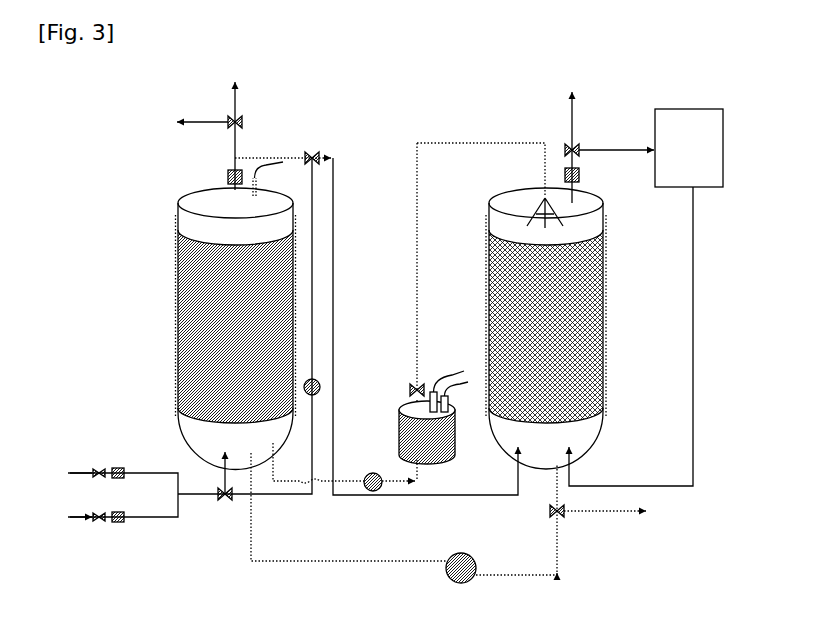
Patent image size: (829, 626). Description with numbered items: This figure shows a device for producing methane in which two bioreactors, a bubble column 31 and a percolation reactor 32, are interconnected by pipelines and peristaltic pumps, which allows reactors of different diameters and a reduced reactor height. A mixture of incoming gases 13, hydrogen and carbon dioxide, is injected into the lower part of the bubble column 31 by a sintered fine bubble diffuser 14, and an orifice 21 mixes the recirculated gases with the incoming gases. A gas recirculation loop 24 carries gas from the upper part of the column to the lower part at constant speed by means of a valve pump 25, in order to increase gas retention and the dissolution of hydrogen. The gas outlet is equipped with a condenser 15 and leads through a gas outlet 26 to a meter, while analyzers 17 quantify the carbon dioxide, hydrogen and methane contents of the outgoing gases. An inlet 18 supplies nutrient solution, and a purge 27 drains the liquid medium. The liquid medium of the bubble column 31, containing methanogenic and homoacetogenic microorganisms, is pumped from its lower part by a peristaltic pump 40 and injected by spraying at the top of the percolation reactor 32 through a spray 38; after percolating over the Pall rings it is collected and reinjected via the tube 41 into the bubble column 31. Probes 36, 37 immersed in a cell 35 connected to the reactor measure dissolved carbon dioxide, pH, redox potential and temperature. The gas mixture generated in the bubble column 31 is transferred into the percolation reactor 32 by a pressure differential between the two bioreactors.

The incoming gases 13 is at (200, 501).
The sintered fine bubble diffuser 14 is at (196, 430).
The condenser 15 is at (226, 177).
The analyzers 17 is at (646, 297).
The inlet for the supply of nutrient solution 18 is at (620, 147).
The orifice 21 is at (225, 504).
The gas recirculation loop 24 is at (322, 342).
The valve pump 25 is at (322, 387).
The gas outlet 26 is at (566, 106).
The purge of the liquid medium 27 is at (609, 511).
The bubble column 31 is at (177, 292).
The percolation reactor 32 is at (607, 294).
The cell 35 is at (438, 443).
The probe 36 is at (447, 384).
The probe 37 is at (454, 395).
The spray 38 is at (538, 203).
The peristaltic pump 40 is at (373, 471).
The tube 41 is at (348, 558).